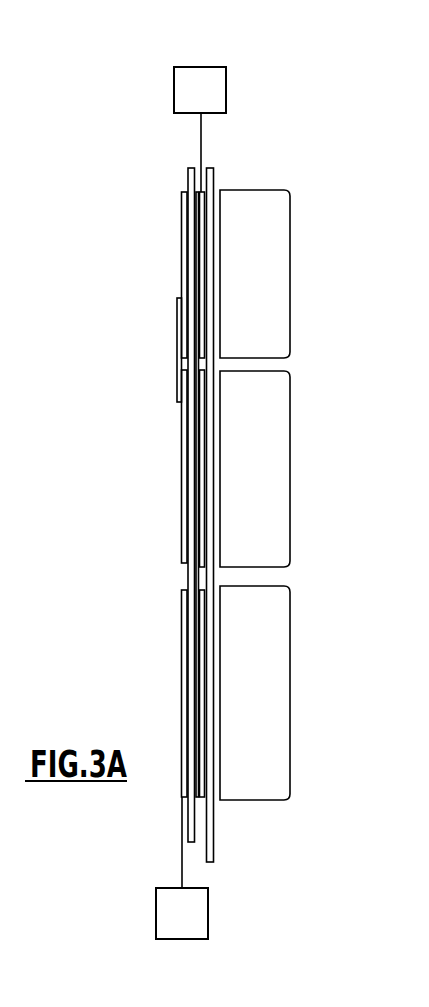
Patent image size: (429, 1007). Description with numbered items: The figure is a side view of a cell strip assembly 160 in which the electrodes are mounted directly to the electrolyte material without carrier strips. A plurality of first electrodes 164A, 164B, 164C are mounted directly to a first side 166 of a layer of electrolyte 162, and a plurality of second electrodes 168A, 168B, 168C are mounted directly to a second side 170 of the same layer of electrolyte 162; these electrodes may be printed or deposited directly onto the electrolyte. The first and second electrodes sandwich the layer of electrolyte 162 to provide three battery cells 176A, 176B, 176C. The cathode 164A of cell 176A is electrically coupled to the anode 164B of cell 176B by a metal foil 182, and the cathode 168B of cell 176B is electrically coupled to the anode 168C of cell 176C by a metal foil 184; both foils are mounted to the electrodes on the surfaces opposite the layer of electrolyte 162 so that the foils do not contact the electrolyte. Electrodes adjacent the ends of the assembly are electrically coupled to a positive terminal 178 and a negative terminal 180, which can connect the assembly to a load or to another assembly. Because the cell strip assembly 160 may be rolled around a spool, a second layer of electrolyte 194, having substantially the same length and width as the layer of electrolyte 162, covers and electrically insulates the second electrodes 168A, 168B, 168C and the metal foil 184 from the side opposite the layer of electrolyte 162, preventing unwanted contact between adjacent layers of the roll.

The cell strip assembly 160 is at (298, 157).
The layer of electrolyte 162 is at (193, 238).
The first electrode 164A is at (182, 256).
The first electrode 164B is at (181, 457).
The first electrode 164C is at (181, 668).
The first side 166 is at (188, 172).
The second electrode 168A is at (205, 283).
The second electrode 168B is at (205, 447).
The second electrode 168C is at (205, 678).
The second side 170 is at (182, 363).
The battery cell 176A is at (290, 293).
The battery cell 176B is at (290, 470).
The battery cell 176C is at (290, 685).
The positive terminal 178 is at (227, 95).
The negative terminal 180 is at (156, 912).
The metal foil 182 is at (178, 355).
The metal foil 184 is at (203, 582).
The second layer of electrolyte 194 is at (213, 180).